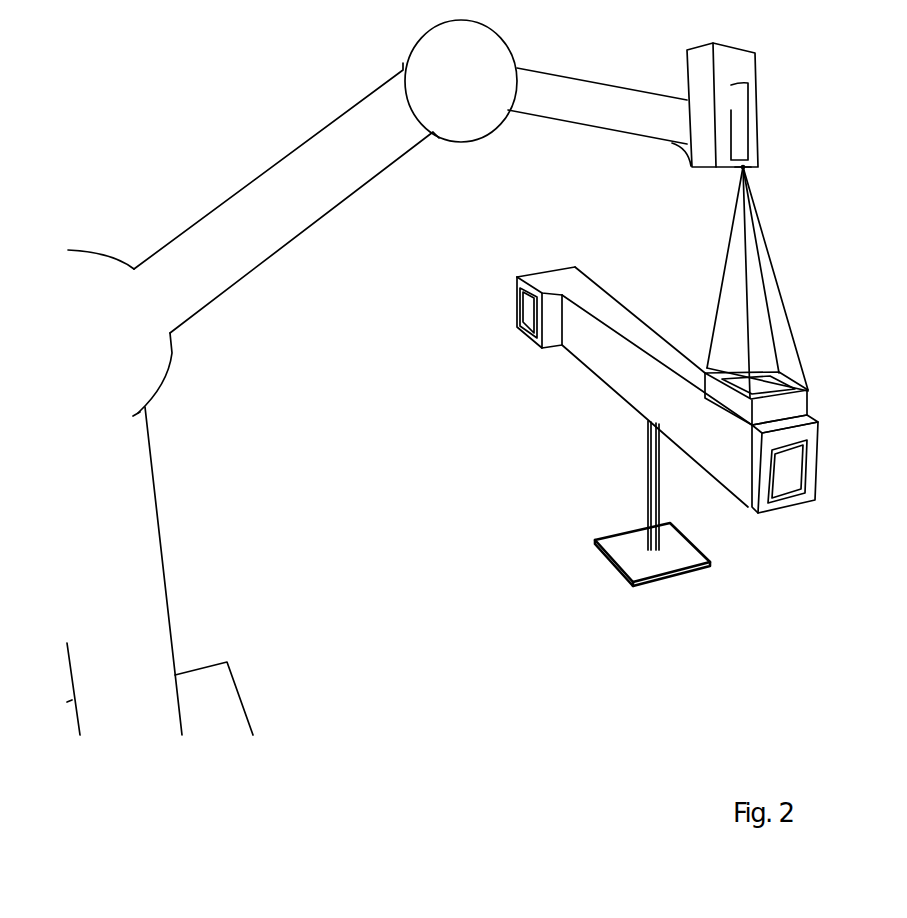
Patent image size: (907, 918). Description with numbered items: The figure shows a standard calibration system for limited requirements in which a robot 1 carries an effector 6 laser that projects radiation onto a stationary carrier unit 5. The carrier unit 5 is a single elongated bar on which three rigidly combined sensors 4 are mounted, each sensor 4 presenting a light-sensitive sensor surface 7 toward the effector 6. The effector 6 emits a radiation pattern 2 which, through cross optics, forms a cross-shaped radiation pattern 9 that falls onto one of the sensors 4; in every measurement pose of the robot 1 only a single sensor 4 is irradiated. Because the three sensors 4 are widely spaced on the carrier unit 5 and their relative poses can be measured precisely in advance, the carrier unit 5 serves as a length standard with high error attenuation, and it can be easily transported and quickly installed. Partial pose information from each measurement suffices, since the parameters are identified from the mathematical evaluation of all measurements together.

The robot 1 is at (167, 389).
The radiation pattern (point image) 2 is at (743, 145).
The sensor (radiation-pattern position sensor) 4 is at (515, 275).
The carrier unit 5 is at (652, 401).
The effector 6 is at (690, 167).
The light-sensitive sensor surface 7 is at (528, 311).
The radiation pattern (cross-shaped image) 9 is at (782, 328).